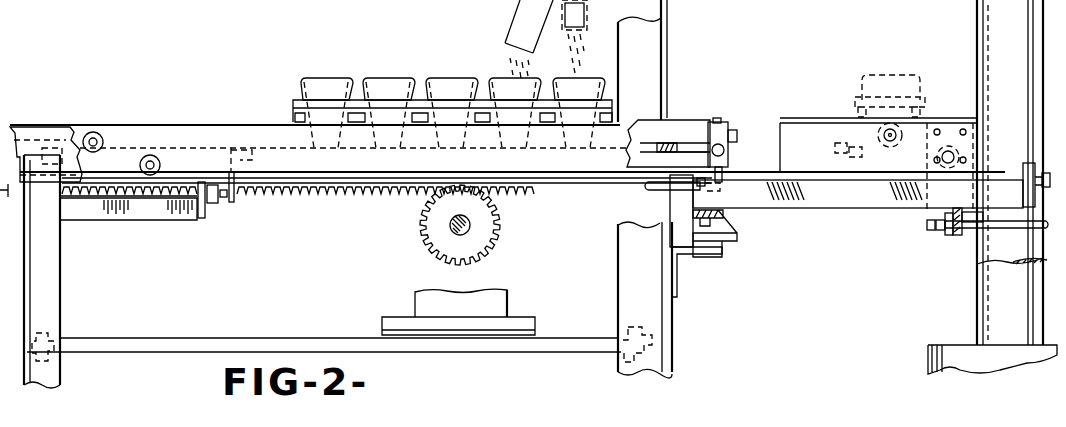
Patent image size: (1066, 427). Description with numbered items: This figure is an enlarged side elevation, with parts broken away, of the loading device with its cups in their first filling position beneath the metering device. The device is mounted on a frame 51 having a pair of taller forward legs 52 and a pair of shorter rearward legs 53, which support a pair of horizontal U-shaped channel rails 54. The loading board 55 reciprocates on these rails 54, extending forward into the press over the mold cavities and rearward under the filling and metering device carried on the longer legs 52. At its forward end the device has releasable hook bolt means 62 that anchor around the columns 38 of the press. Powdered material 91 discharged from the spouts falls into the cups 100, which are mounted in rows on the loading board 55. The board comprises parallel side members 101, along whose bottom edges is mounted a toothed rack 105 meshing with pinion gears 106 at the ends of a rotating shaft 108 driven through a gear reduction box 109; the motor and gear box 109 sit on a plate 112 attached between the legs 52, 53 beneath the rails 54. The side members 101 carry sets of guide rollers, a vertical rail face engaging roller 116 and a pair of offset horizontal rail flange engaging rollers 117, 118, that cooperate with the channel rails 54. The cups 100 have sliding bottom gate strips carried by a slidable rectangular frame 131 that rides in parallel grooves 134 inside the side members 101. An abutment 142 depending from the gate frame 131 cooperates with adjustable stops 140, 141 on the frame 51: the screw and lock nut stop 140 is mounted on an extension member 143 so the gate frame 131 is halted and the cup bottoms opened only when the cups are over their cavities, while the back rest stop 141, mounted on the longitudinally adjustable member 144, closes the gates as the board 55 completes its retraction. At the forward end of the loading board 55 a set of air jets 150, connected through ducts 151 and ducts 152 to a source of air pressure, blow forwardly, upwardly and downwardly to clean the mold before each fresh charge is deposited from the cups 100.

The columns 38 is at (985, 28).
The frame 51 is at (679, 318).
The forward legs 52 is at (660, 41).
The rearward legs 53 is at (65, 290).
The horizontal rails 54 is at (32, 127).
The loading board 55 is at (188, 117).
The releasable hook bolt means 62 is at (1003, 229).
The powdered material 91 is at (586, 45).
The cups 100 is at (325, 82).
The parallel side members 101 is at (653, 123).
The toothed rack 105 is at (334, 187).
The pinion gears 106 is at (490, 223).
The rotating shaft 108 is at (450, 229).
The gear reduction box 109 is at (423, 298).
The plate 112 is at (577, 332).
The vertical rail face engaging roller 116 is at (55, 147).
The horizontal rail flange engaging roller 117 is at (97, 133).
The horizontal rail flange engaging roller 118 is at (150, 155).
The slidable rectangular frame 131 is at (668, 143).
The parallel grooves 134 is at (705, 150).
The adjustable stop 140 is at (1023, 168).
The adjustable stop 141 is at (214, 205).
The abutment 142 is at (238, 184).
The extension member 143 is at (807, 205).
The member 144 is at (100, 214).
The air jets 150 is at (722, 120).
The ducts 151 is at (737, 136).
The ducts 152 is at (660, 190).